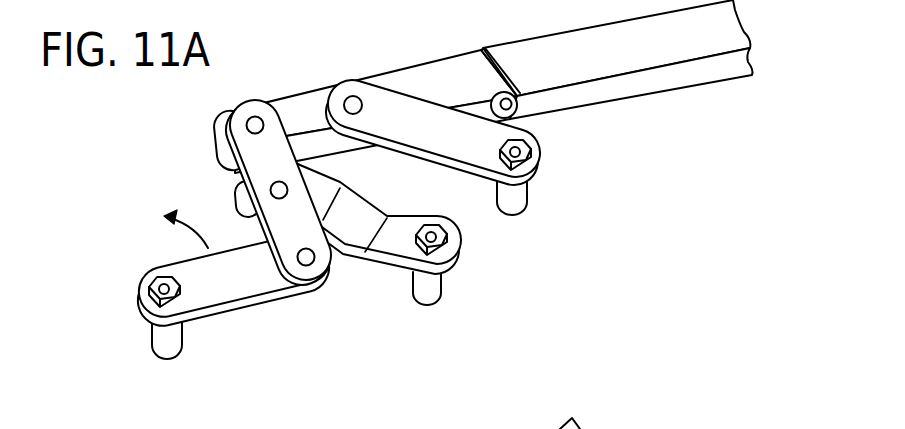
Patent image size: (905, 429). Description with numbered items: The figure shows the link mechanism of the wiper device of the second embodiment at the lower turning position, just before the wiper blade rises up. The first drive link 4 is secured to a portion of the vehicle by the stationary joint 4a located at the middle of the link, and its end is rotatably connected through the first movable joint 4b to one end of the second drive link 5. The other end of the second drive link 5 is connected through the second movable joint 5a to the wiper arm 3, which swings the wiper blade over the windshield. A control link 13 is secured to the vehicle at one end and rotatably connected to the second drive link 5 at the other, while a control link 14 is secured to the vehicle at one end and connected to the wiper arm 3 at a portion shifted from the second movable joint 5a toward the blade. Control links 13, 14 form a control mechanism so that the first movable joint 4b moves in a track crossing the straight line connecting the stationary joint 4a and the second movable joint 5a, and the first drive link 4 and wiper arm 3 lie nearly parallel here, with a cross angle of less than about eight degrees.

The wiper arm 3 is at (443, 80).
The first drive link 4 is at (228, 292).
The stationary joint 4a is at (163, 282).
The first movable joint 4b is at (308, 263).
The second drive link 5 is at (256, 163).
The second movable joint 5a is at (253, 113).
The control link 13 is at (350, 230).
The control link 14 is at (430, 133).